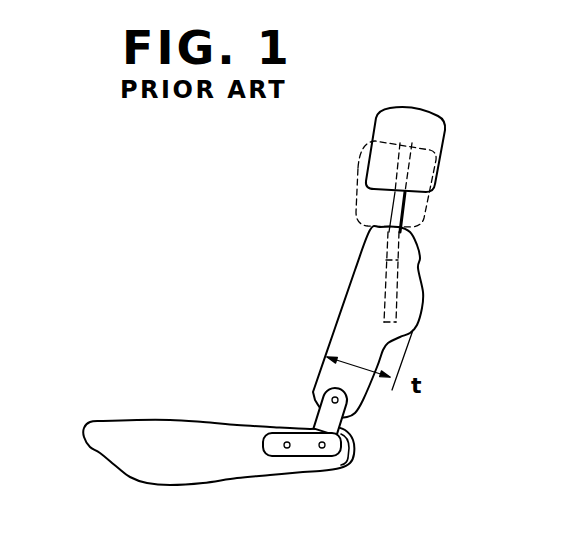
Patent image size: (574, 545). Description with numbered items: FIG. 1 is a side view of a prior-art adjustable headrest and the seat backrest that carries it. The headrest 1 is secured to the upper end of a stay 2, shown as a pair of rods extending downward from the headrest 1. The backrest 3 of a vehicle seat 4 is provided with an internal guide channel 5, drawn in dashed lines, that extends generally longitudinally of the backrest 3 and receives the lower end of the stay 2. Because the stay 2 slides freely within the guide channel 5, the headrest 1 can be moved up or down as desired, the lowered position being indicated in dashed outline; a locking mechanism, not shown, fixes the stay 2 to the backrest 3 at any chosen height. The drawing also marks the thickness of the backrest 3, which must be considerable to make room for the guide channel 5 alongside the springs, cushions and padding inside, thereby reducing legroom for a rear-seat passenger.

The headrest 1 is at (443, 130).
The stay 2 is at (396, 202).
The backrest 3 is at (357, 297).
The vehicle seat 4 is at (177, 420).
The guide channel 5 is at (394, 276).